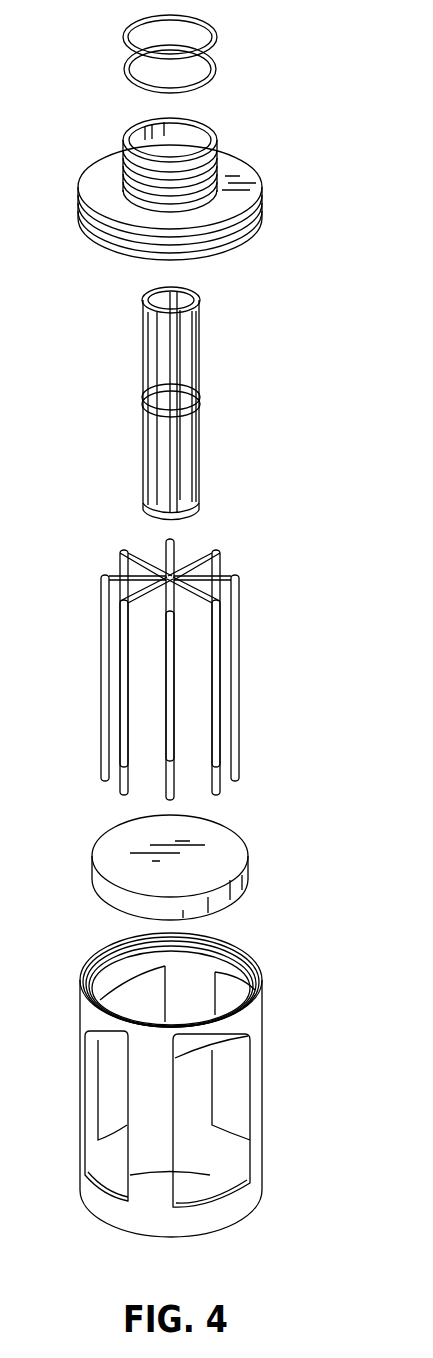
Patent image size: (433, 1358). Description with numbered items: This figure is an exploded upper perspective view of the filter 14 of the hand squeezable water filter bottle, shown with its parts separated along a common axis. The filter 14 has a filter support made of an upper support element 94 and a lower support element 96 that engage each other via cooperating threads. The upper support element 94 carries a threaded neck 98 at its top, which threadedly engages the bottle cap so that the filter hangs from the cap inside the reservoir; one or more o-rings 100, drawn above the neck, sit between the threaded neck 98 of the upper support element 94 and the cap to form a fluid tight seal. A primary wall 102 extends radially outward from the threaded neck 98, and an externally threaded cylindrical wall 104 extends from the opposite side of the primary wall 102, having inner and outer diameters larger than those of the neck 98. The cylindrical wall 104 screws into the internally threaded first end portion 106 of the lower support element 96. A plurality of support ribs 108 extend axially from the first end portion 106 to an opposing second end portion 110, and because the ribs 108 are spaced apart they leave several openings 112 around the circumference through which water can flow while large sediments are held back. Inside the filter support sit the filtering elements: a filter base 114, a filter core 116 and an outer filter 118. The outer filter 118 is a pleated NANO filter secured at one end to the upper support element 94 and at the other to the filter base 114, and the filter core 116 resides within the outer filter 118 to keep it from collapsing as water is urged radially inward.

The filter 14 is at (285, 1253).
The upper support element 94 is at (152, 198).
The lower support element 96 is at (136, 1103).
The threaded neck 98 is at (217, 152).
The o-rings 100 is at (217, 35).
The primary wall 102 is at (110, 208).
The externally threaded cylindrical wall 104 is at (227, 240).
The internally threaded first end portion 106 is at (85, 1002).
The support ribs 108 is at (85, 1110).
The second end portion 110 is at (127, 1220).
The openings 112 is at (204, 1176).
The filter base 114 is at (108, 838).
The filter core 116 is at (200, 430).
The outer filter 118 is at (100, 640).